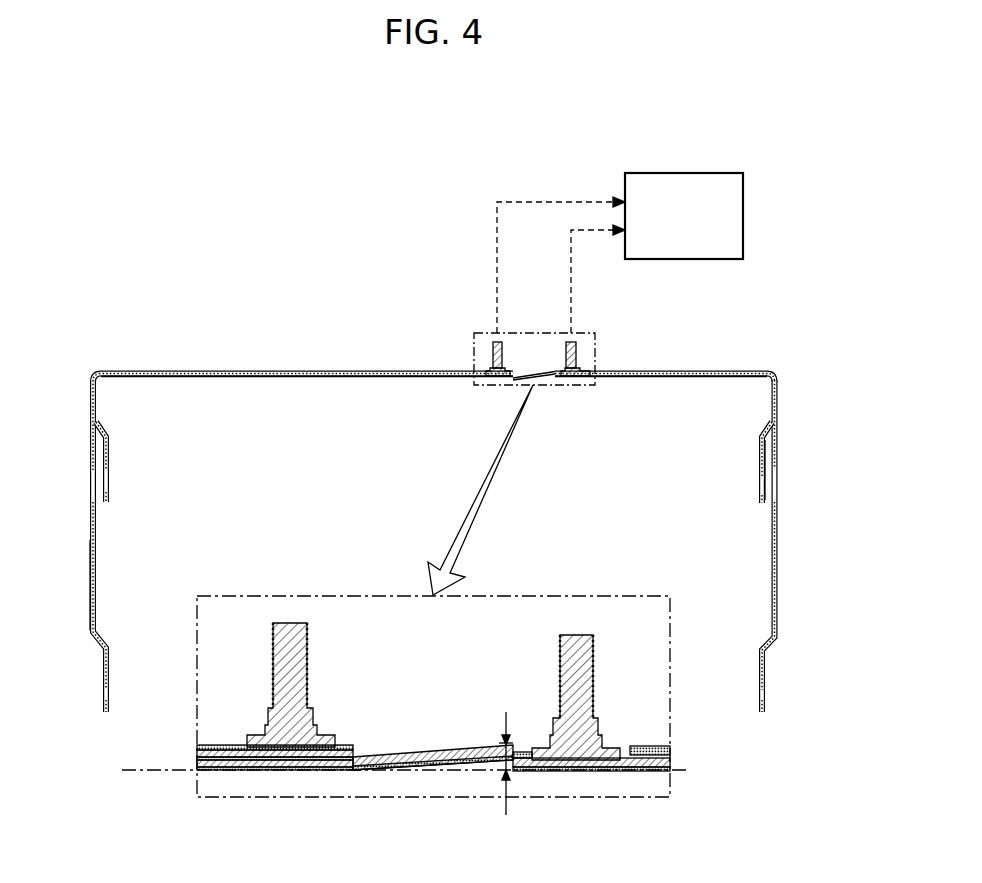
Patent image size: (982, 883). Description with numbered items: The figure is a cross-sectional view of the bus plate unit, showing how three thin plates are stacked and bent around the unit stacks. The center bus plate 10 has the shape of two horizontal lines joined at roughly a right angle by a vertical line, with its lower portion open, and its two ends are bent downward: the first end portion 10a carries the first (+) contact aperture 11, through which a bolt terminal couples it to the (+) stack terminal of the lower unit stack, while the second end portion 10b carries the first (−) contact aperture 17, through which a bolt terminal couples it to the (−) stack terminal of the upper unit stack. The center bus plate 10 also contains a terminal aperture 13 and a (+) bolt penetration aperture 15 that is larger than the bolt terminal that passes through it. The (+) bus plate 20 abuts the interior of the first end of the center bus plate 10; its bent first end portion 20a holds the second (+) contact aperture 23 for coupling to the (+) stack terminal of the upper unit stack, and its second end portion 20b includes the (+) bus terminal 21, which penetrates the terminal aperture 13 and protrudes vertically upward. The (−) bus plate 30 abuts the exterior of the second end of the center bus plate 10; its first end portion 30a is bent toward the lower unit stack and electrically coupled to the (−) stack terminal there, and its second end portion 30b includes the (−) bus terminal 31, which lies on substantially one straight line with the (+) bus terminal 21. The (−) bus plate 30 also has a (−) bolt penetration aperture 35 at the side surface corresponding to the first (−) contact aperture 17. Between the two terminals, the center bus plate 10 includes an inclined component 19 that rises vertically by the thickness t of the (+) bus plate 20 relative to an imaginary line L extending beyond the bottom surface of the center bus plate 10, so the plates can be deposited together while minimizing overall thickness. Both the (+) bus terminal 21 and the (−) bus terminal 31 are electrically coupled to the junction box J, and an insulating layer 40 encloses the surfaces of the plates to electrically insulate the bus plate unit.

The center bus plate 10 is at (233, 378).
The first end portion 10a is at (778, 585).
The second end portion 10b is at (110, 445).
The first (+) contact aperture 11 is at (768, 695).
The terminal aperture 13 is at (627, 744).
The (+) bolt penetration aperture 15 is at (782, 485).
The first (−) contact aperture 17 is at (112, 485).
The inclined component 19 is at (530, 374).
The (+) bus plate 20 is at (768, 438).
The first end portion 20a is at (759, 440).
The second end portion 20b is at (580, 383).
The (+) bus terminal 21 is at (577, 350).
The second (+) contact aperture 23 is at (757, 485).
The (−) bus plate 30 is at (85, 543).
The first end portion 30a is at (97, 583).
The second end portion 30b is at (325, 371).
The (−) bus terminal 31 is at (495, 350).
The (−) bolt penetration aperture 35 is at (86, 485).
The insulating layer 40 is at (352, 745).
The junction box J is at (745, 215).
The imaginary line L is at (385, 770).
The thickness t is at (498, 760).